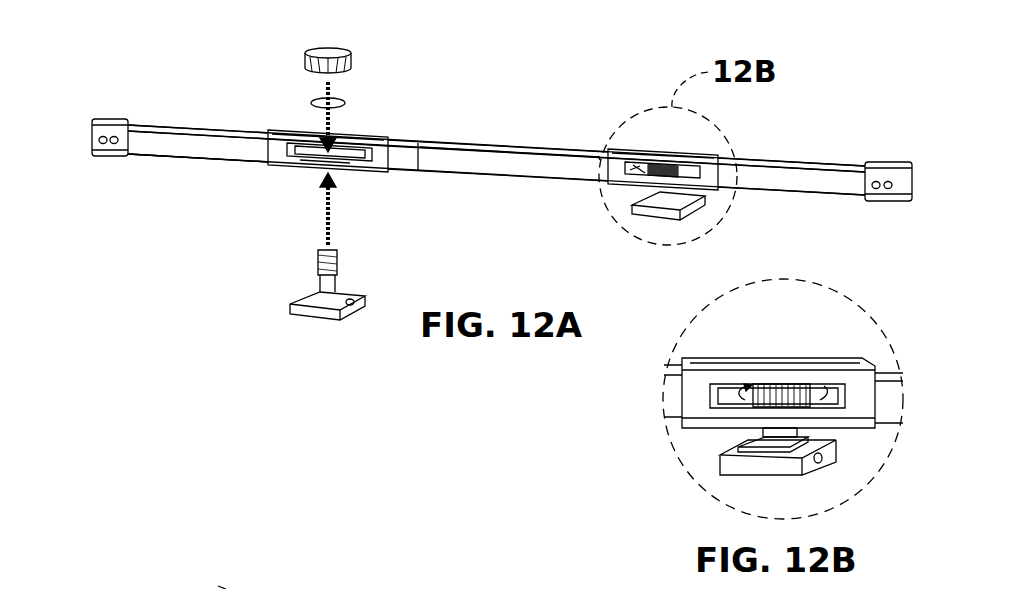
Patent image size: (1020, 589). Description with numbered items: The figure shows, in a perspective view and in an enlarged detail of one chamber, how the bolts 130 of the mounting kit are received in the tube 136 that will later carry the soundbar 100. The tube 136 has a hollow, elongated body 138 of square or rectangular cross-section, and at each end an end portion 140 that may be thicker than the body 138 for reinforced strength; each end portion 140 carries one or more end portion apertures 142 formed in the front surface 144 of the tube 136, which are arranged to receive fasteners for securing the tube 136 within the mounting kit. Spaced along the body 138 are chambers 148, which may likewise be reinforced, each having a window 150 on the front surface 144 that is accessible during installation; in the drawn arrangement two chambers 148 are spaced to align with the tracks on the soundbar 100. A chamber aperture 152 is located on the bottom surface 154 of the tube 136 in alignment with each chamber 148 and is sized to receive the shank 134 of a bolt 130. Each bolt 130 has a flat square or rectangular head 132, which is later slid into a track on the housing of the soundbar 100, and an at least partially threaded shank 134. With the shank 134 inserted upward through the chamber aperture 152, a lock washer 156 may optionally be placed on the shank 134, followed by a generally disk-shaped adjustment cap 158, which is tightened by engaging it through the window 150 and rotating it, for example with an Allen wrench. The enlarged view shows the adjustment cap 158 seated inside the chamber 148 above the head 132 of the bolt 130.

In FIG. 12A, the soundbar 100 is at (225, 588).
In FIG. 12A, the bolt 130 is at (280, 325).
In FIG. 12A, the head 132 is at (315, 318).
In FIG. 12B, the head 132 is at (758, 475).
In FIG. 12A, the shank 134 is at (318, 268).
In FIG. 12A, the tube 136 is at (502, 163).
In FIG. 12A, the body 138 is at (474, 155).
In FIG. 12A, the end portion 140 is at (118, 158).
In FIG. 12A, the end portion aperture 142 is at (99, 140).
In FIG. 12A, the front surface 144 is at (236, 148).
In FIG. 12A, the chamber 148 is at (338, 169).
In FIG. 12B, the chamber 148 is at (748, 388).
In FIG. 12A, the window 150 is at (360, 160).
In FIG. 12A, the chamber aperture 152 is at (335, 158).
In FIG. 12A, the bottom surface 154 is at (170, 160).
In FIG. 12A, the lock washer 156 is at (312, 103).
In FIG. 12A, the adjustment cap 158 is at (305, 60).
In FIG. 12B, the adjustment cap 158 is at (760, 400).